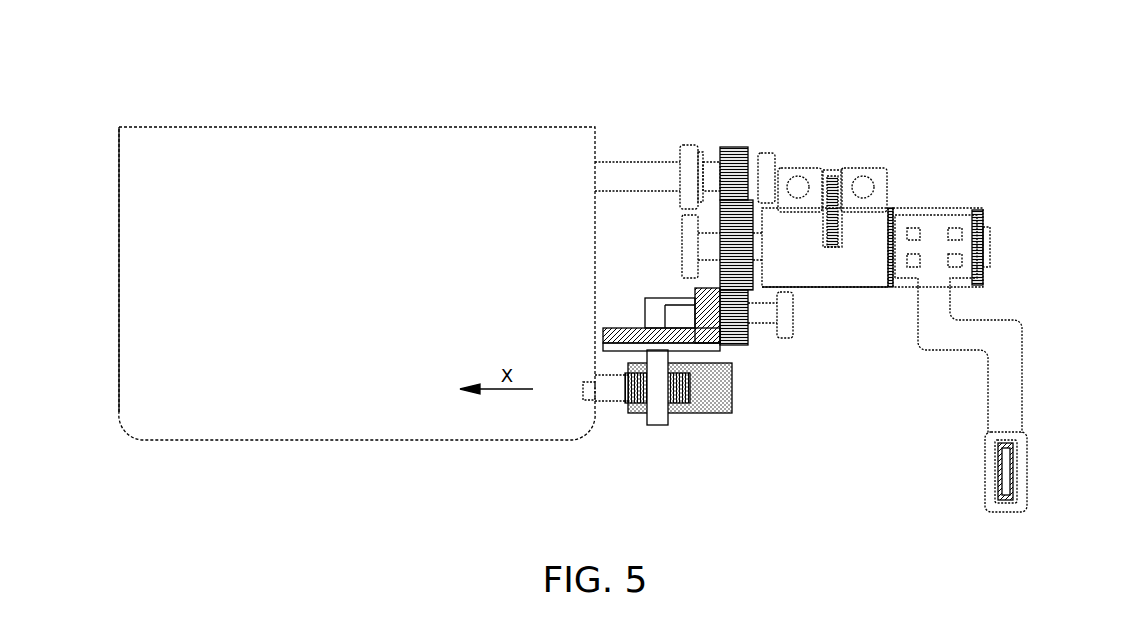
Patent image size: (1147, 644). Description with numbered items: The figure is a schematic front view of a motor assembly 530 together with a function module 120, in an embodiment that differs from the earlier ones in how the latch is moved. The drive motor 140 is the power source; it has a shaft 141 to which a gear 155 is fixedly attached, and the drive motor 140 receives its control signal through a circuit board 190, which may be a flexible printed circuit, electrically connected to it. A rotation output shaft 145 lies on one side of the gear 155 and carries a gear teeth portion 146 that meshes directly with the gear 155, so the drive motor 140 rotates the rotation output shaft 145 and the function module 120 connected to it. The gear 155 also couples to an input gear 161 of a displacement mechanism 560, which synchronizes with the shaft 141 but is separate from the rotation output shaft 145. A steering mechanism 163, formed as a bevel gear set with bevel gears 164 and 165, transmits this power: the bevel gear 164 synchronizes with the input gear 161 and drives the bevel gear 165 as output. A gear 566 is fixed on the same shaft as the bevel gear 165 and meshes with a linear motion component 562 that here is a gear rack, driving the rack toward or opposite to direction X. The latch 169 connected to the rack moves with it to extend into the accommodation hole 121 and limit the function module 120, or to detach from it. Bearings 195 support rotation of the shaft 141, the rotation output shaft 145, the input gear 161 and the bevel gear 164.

The function module 120 is at (301, 440).
The accommodation hole 121 is at (582, 393).
The latch 169 is at (604, 406).
The linear motion component 562 is at (717, 416).
The gear 566 is at (657, 416).
The displacement mechanism 560 is at (678, 460).
The bevel gear 165 is at (625, 328).
The bevel gear 164 is at (697, 293).
The steering mechanism 163 is at (1088, 80).
The input gear 161 is at (748, 340).
The shaft 141 is at (708, 240).
The gear teeth portion 146 is at (733, 147).
The rotation output shaft 145 is at (660, 165).
The bearings 195 is at (768, 153).
The gear 155 is at (762, 264).
The drive motor 140 is at (933, 210).
The circuit board 190 is at (1010, 378).
The motor assembly 530 is at (933, 95).